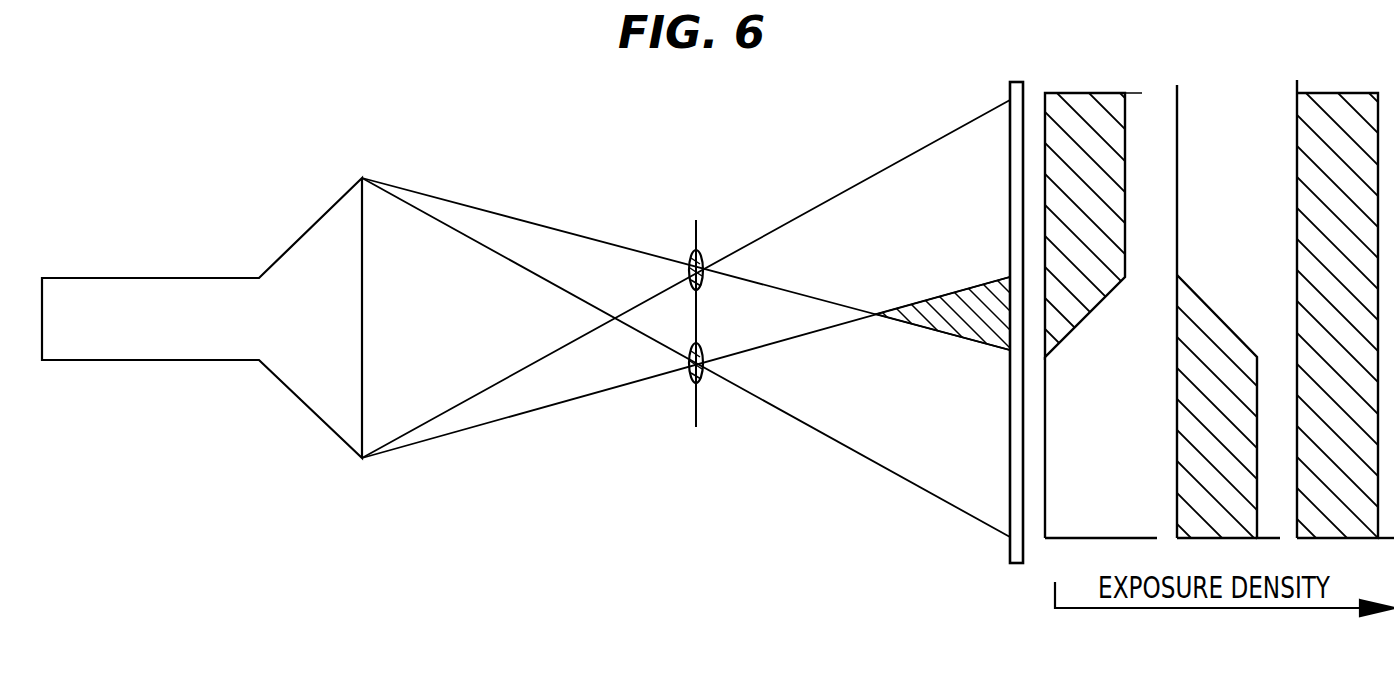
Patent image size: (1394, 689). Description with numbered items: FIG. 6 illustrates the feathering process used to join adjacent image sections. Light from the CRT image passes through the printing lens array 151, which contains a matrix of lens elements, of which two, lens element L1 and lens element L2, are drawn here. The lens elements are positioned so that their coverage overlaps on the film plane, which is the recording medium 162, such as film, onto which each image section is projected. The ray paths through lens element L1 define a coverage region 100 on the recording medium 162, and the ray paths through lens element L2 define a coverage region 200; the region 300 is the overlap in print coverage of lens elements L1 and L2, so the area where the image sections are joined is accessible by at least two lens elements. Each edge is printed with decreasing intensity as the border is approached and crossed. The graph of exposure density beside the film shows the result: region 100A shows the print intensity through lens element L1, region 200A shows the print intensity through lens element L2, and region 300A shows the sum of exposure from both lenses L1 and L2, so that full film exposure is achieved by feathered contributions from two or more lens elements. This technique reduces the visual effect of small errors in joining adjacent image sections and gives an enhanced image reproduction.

The print coverage region of lens element L1 100 is at (961, 239).
The print coverage region of lens element L2 200 is at (930, 412).
The overlap region 300 is at (997, 332).
The printing lens array 151 is at (694, 428).
The recording medium 162 is at (1012, 553).
The print intensity region through lens element L1 100A is at (1075, 108).
The print intensity region through lens element L2 200A is at (1200, 302).
The summed exposure region 300A is at (1341, 110).
The lens element L1 is at (688, 256).
The lens element L2 is at (688, 378).